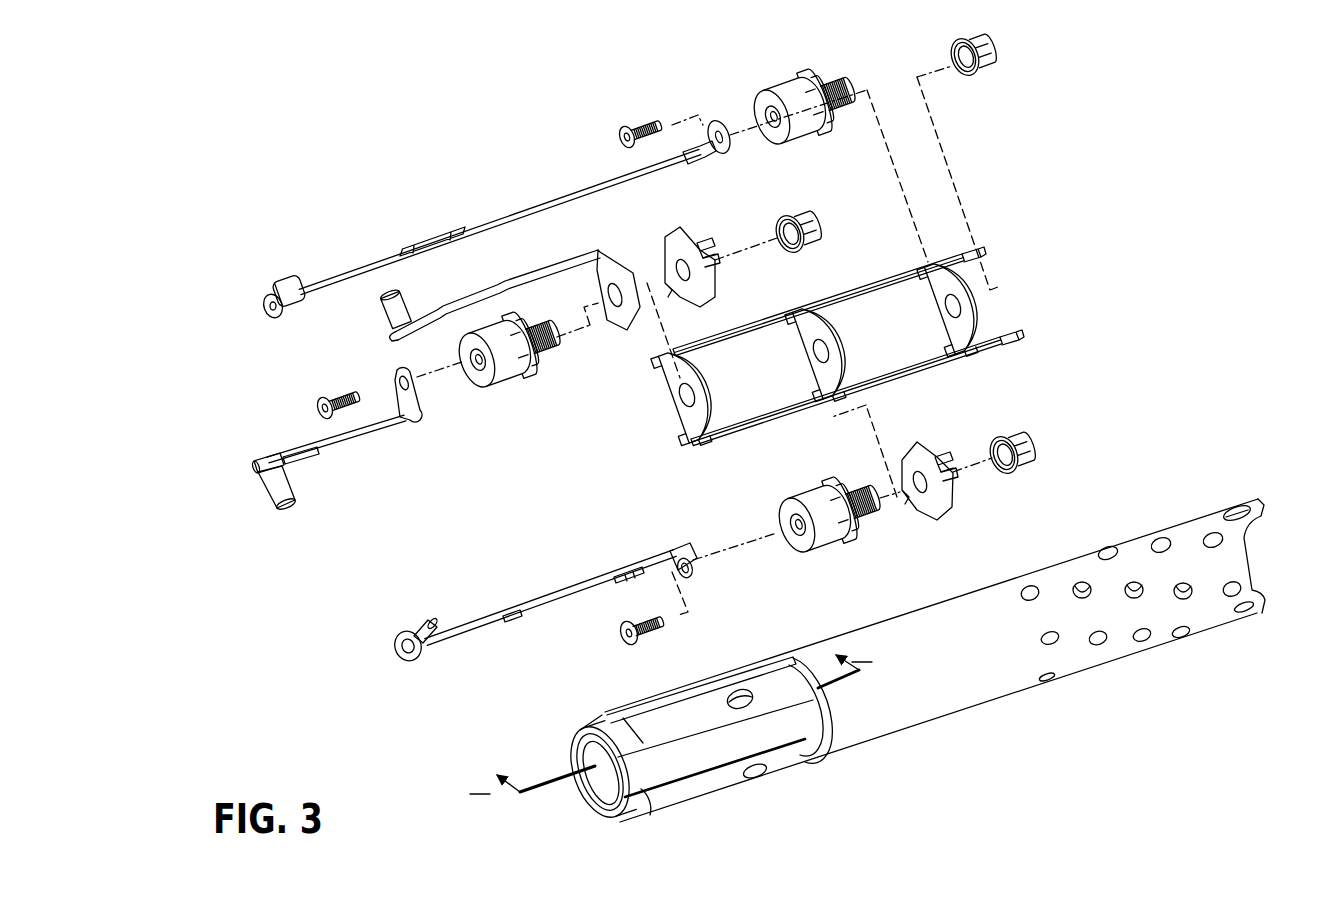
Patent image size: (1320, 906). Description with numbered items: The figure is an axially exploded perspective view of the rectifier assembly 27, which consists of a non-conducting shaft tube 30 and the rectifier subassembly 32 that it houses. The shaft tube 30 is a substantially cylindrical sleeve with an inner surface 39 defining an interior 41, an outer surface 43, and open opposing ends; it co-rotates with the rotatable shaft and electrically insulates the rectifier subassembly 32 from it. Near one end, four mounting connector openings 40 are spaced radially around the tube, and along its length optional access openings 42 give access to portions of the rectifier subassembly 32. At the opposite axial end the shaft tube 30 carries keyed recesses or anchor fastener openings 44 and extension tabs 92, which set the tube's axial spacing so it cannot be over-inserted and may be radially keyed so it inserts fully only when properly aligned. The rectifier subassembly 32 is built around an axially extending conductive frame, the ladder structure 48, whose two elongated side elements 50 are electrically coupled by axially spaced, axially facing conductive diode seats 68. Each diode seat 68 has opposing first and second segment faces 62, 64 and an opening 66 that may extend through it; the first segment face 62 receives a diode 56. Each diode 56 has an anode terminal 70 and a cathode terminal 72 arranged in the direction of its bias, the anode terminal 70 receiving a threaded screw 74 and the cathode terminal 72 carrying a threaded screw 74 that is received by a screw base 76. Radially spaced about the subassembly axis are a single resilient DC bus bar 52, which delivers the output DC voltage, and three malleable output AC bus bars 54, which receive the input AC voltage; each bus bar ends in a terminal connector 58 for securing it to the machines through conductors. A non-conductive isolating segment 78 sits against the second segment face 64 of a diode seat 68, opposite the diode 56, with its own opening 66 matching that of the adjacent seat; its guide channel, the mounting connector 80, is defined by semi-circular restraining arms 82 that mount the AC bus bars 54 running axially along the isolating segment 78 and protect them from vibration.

The rectifier assembly 27 is at (500, 85).
The shaft tube 30 is at (899, 649).
The rectifier subassembly 32 is at (1090, 183).
The inner surface 39 is at (582, 752).
The mounting connector openings 40 is at (750, 716).
The interior 41 is at (598, 782).
The access openings 42 is at (1092, 601).
The outer surface 43 is at (960, 692).
The anchor fastener openings 44 is at (1246, 618).
The ladder structure 48 is at (837, 399).
The side elements 50 is at (848, 293).
The DC bus bar 52 is at (485, 295).
The AC bus bars 54 is at (430, 236).
The diode 56 is at (668, 324).
The terminal connectors 58 is at (270, 303).
The first segment face 62 is at (953, 330).
The second segment face 64 is at (994, 300).
The opening 66 is at (673, 262).
The diode seat 68 is at (1000, 316).
The anode terminal 70 is at (756, 116).
The cathode terminal 72 is at (839, 89).
The threaded screw 74 is at (633, 128).
The screw base 76 is at (988, 62).
The isolating segment 78 is at (833, 378).
The mounting connector 80 is at (704, 240).
The restraining arms 82 is at (712, 260).
The extension tabs 92 is at (1257, 505).